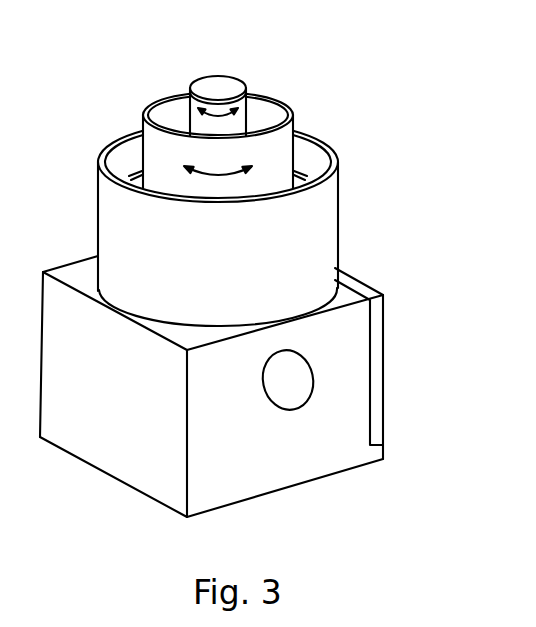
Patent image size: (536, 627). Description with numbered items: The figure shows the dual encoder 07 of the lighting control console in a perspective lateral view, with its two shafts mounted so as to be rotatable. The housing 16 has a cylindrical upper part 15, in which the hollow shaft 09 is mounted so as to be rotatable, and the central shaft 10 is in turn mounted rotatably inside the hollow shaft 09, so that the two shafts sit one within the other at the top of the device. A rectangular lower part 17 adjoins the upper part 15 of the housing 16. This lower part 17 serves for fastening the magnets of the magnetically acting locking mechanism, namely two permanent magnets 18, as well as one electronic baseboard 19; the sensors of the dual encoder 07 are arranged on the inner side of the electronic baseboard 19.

The dual encoder 07 is at (272, 267).
The hollow shaft 09 is at (275, 157).
The central shaft 10 is at (218, 85).
The cylindrical upper part 15 is at (310, 242).
The housing 16 is at (272, 365).
The rectangular lower part 17 is at (338, 457).
The permanent magnets 18 is at (285, 392).
The electronic baseboard 19 is at (383, 363).